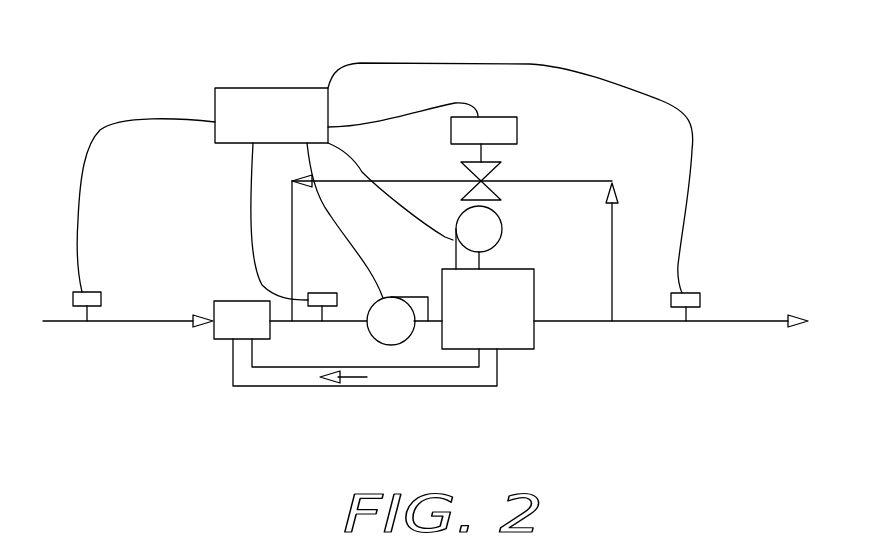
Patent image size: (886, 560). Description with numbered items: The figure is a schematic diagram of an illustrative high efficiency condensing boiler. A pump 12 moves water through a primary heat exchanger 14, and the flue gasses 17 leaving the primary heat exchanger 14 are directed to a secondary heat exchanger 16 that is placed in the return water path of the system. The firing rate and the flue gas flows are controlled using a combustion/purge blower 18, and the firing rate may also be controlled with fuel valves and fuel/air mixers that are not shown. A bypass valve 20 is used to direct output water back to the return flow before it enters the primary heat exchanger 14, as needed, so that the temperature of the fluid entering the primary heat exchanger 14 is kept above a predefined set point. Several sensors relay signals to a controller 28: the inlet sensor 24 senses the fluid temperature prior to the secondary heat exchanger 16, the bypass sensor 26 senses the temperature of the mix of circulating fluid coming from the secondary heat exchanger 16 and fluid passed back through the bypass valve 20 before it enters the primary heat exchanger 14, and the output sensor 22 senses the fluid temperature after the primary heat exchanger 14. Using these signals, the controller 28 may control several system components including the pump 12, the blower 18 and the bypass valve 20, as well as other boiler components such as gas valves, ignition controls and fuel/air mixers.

The pump 12 is at (397, 321).
The primary heat exchanger 14 is at (525, 340).
The secondary heat exchanger 16 is at (223, 330).
The flue gasses 17 is at (366, 378).
The combustion/purge blower 18 is at (497, 228).
The bypass valve 20 is at (517, 138).
The output sensor 22 is at (690, 303).
The inlet sensor 24 is at (90, 300).
The bypass sensor 26 is at (324, 293).
The controller 28 is at (230, 88).